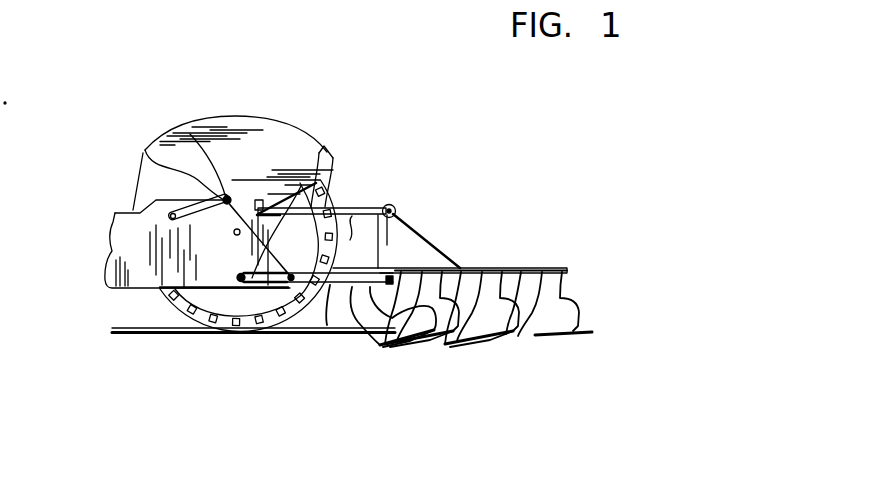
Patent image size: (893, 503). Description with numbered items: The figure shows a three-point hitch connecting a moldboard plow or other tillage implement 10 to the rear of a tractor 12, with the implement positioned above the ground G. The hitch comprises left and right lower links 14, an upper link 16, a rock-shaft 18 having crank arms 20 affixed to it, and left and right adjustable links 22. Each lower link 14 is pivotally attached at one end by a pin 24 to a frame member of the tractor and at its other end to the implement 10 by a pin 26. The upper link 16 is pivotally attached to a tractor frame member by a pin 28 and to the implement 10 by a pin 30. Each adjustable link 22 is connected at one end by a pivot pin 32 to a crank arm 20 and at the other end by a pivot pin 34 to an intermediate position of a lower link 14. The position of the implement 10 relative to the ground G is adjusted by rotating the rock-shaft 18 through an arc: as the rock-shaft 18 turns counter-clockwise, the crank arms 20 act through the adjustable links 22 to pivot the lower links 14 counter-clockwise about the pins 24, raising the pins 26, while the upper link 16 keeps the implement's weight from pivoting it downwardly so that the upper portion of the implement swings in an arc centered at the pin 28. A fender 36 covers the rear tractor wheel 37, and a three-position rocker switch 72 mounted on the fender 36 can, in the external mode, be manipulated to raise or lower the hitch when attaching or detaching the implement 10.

The tillage implement 10 is at (470, 218).
The tractor 12 is at (103, 248).
The lower links 14 is at (336, 284).
The upper link 16 is at (364, 243).
The rock-shaft 18 is at (173, 216).
The crank arms 20 is at (146, 152).
The adjustable links 22 is at (250, 255).
The pins 24 is at (216, 302).
The pins 26 is at (397, 284).
The pin 28 is at (253, 218).
The pin 30 is at (398, 212).
The pivot pin 32 is at (197, 137).
The pivot pin 34 is at (259, 310).
The fenders 36 is at (260, 118).
The rear tractor wheels 37 is at (315, 284).
The three-position rocker switch 72 is at (327, 153).
The ground G is at (127, 327).